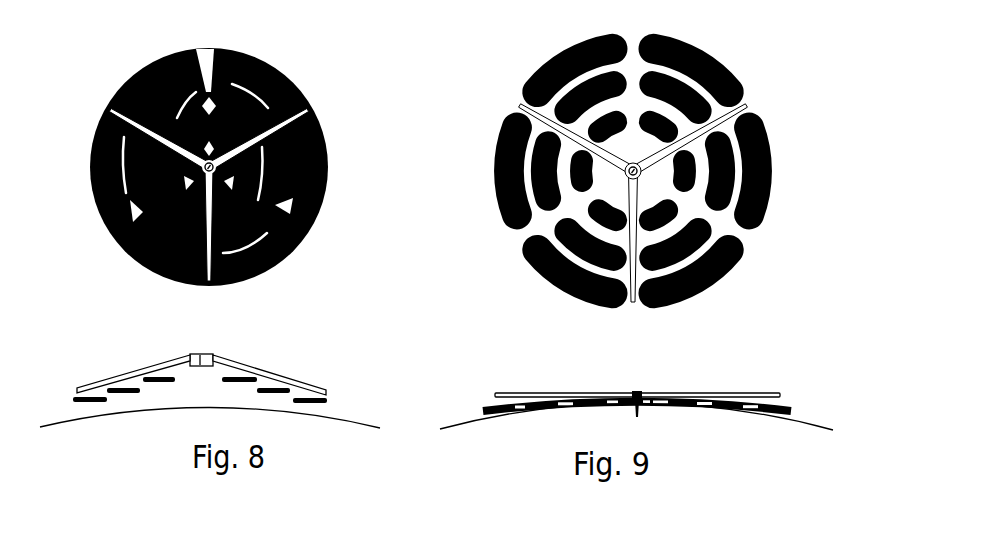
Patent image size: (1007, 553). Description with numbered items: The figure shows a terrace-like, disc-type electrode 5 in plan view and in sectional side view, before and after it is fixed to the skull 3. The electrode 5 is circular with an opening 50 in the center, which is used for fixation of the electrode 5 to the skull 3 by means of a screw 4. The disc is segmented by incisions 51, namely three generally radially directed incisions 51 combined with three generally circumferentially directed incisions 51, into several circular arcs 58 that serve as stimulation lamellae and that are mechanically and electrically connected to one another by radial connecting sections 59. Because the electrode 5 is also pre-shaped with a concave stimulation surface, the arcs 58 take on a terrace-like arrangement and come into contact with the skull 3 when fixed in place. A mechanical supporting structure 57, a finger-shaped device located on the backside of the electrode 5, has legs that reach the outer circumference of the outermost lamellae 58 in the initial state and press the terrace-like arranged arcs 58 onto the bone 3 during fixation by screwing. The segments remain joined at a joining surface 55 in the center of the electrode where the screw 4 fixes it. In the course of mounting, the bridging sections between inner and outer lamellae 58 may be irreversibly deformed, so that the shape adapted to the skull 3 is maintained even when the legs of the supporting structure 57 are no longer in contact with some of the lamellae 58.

In FIG. 8, the skull 3 is at (68, 418).
In FIG. 9, the skull 3 is at (462, 423).
In FIG. 9, the screw 4 is at (636, 392).
In FIG. 8, the electrode 5 is at (474, 165).
In FIG. 8, the opening 50 is at (115, 230).
In FIG. 9, the opening 50 is at (558, 290).
In FIG. 9, the incision 51 is at (540, 220).
In FIG. 8, the joining surface 55 is at (183, 364).
In FIG. 8, the mechanical supporting structure 57 is at (323, 128).
In FIG. 9, the mechanical supporting structure 57 is at (748, 102).
In FIG. 8, the circular arcs 58 is at (293, 75).
In FIG. 9, the circular arcs 58 is at (562, 48).
In FIG. 8, the radial connecting sections 59 is at (303, 398).
In FIG. 9, the radial connecting sections 59 is at (773, 147).